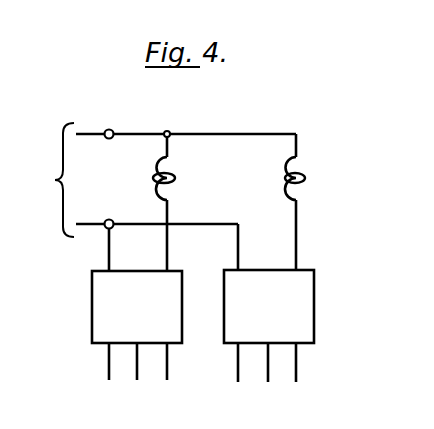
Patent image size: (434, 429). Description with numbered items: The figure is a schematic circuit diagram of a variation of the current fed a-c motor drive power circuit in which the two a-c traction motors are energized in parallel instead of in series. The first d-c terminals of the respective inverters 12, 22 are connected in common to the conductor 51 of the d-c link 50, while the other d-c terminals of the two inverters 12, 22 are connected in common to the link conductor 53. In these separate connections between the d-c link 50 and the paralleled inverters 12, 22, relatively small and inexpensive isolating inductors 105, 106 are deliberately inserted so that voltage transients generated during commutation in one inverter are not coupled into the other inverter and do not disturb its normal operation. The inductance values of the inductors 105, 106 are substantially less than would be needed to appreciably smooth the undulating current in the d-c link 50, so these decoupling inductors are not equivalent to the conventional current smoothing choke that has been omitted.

The d-c link 50 is at (49, 180).
The conductor of the d-c link 51 is at (90, 132).
The link conductor 53 is at (93, 227).
The isolating inductor 105 is at (173, 179).
The isolating inductor 106 is at (302, 176).
The inverter 12 is at (92, 312).
The inverter 22 is at (314, 269).